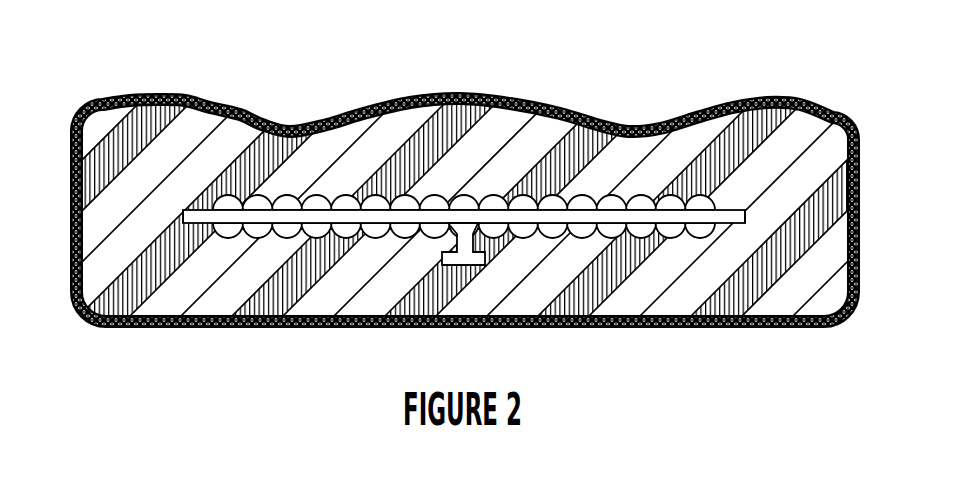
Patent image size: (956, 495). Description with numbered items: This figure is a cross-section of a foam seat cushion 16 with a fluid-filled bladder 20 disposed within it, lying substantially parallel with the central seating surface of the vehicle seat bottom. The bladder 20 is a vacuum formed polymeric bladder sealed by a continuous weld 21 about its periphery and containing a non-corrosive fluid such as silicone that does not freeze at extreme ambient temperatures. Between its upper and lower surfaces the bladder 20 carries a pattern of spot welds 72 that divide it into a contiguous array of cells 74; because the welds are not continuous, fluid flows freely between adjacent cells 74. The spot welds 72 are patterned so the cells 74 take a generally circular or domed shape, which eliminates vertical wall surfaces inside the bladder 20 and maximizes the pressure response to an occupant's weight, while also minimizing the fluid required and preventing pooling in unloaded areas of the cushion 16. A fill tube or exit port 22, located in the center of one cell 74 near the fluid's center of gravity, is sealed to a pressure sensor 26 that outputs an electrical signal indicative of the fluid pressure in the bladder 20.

The foam cushion 16 is at (250, 140).
The bladder 20 is at (643, 238).
The continuous weld 21 is at (730, 210).
The fill tube or exit port 22 is at (477, 250).
The pressure sensor 26 is at (462, 262).
The spot welds 72 is at (328, 200).
The cells 74 is at (312, 230).